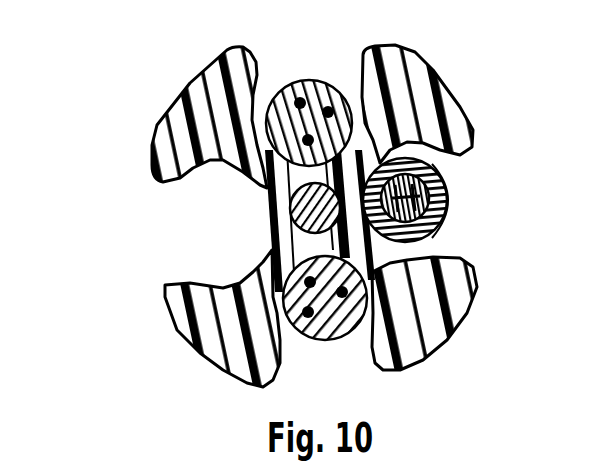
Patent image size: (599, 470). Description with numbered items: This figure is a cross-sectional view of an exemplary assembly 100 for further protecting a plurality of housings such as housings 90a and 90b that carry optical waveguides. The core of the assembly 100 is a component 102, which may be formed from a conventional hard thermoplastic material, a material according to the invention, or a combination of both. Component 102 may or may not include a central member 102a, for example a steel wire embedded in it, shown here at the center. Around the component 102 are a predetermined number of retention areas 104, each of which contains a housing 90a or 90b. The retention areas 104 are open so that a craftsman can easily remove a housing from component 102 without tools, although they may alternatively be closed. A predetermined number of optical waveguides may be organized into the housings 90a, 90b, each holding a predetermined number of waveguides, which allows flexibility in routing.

The assembly 100 is at (306, 206).
The component 102 is at (167, 150).
The central member 102a is at (305, 200).
The retention areas 104 is at (253, 243).
The housing 90a is at (322, 82).
The housing 90b is at (440, 220).